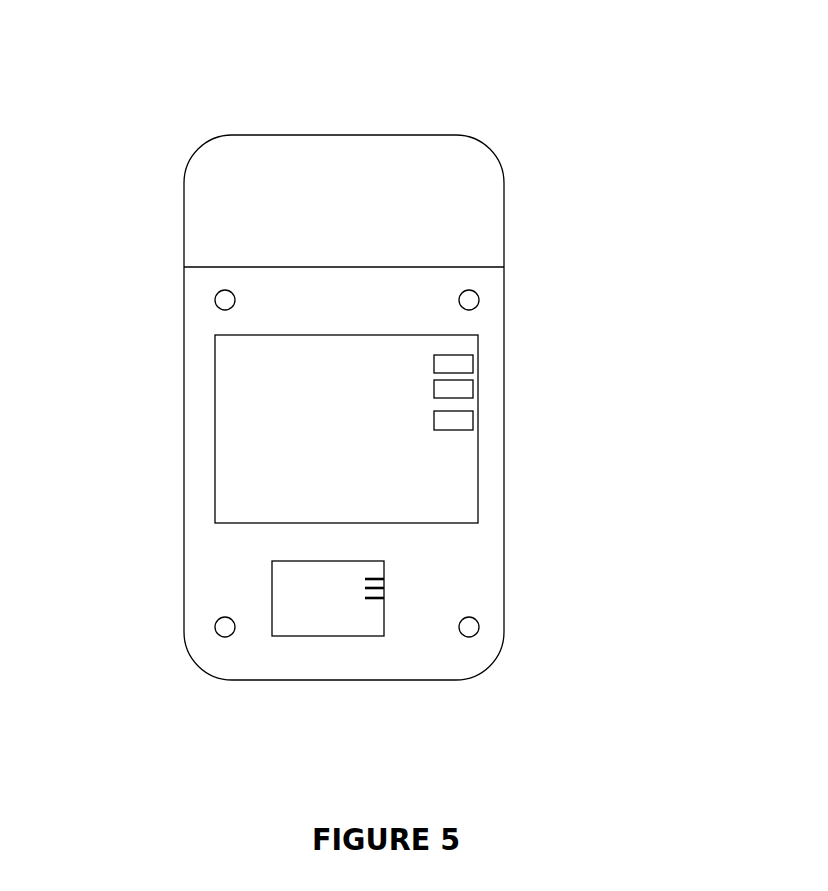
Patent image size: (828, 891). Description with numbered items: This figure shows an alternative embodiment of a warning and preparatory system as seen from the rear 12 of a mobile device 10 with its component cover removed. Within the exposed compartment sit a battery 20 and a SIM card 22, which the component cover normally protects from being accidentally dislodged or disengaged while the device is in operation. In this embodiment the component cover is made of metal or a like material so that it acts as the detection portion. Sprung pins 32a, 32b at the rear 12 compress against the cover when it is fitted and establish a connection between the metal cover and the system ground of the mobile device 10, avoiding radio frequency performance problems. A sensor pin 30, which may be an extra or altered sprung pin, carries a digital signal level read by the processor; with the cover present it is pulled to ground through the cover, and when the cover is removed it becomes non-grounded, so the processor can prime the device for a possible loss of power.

The mobile device 10 is at (522, 148).
The rear 12 is at (505, 242).
The battery 20 is at (447, 503).
The SIM card 22 is at (372, 617).
The sensor pin 30 is at (479, 299).
The sprung pin 32a is at (215, 303).
The sprung pin 32b is at (214, 630).